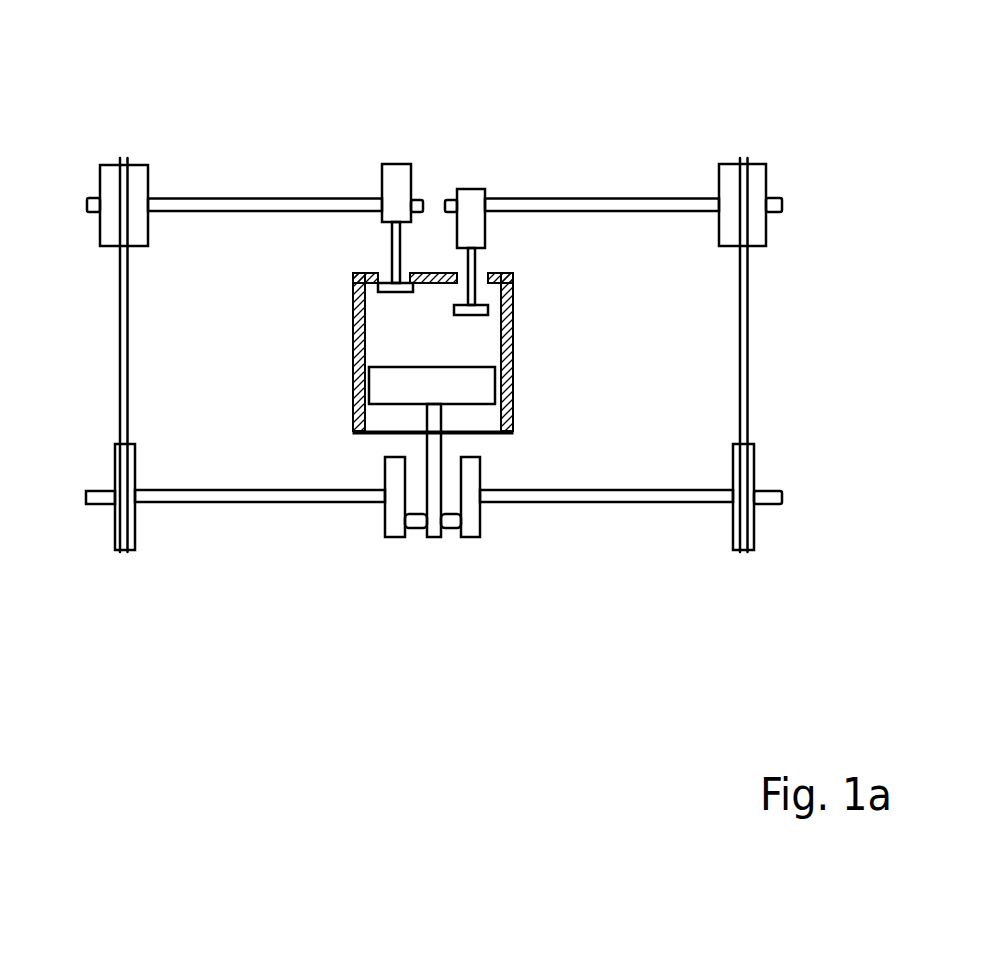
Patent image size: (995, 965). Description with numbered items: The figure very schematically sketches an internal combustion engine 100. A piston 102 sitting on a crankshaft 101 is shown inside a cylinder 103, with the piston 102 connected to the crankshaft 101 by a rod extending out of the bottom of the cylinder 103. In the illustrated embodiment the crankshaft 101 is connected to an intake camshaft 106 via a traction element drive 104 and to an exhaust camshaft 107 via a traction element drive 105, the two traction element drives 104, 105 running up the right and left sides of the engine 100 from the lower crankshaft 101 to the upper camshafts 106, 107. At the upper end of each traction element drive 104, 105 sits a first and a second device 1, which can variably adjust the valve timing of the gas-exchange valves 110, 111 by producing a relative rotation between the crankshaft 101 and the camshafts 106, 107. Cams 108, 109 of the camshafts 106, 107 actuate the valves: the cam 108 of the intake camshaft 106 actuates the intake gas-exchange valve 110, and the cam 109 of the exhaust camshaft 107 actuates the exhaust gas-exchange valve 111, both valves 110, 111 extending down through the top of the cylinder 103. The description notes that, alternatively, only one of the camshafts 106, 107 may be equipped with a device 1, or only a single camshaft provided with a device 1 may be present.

The internal combustion engine 100 is at (661, 148).
The device 1 is at (112, 180).
The crankshaft 101 is at (594, 496).
The piston 102 is at (480, 390).
The cylinder 103 is at (507, 337).
The traction element drive 104 is at (755, 409).
The traction element drive 105 is at (110, 397).
The intake camshaft 106 is at (585, 205).
The exhaust camshaft 107 is at (278, 205).
The cam 108 is at (470, 196).
The cam 109 is at (396, 172).
The intake gas-exchange valve 110 is at (476, 268).
The exhaust gas-exchange valve 111 is at (395, 257).